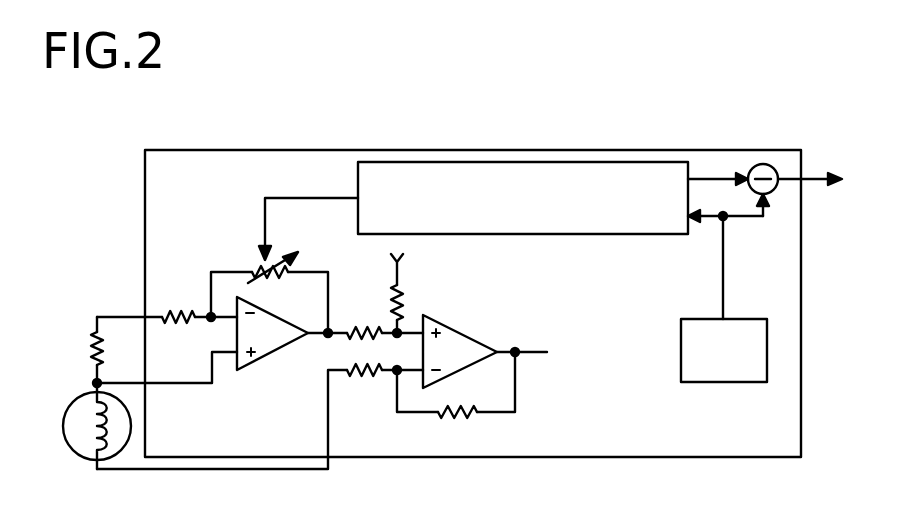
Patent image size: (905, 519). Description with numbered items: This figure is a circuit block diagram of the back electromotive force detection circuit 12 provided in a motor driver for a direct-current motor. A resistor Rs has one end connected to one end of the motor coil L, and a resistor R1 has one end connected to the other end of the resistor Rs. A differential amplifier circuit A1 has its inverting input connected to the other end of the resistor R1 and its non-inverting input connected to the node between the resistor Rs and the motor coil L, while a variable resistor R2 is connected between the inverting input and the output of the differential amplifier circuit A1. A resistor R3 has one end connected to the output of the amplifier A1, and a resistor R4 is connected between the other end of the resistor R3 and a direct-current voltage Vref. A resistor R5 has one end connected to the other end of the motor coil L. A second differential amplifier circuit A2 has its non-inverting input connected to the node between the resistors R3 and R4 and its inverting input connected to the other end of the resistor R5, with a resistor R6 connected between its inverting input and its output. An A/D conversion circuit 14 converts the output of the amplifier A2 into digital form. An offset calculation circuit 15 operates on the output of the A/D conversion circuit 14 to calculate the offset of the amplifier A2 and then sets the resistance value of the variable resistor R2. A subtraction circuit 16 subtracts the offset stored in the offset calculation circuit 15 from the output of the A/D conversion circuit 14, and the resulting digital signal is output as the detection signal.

The back electromotive force detection circuit 12 is at (801, 272).
The A/D conversion circuit 14 is at (728, 382).
The offset calculation circuit 15 is at (455, 162).
The subtraction circuit 16 is at (765, 164).
The resistor R1 is at (199, 303).
The variable resistor R2 is at (269, 292).
The resistor R3 is at (385, 319).
The resistor R4 is at (419, 293).
The resistor R5 is at (385, 388).
The resistor R6 is at (456, 404).
The resistor Rs is at (75, 352).
The differential amplifier circuit A1 is at (277, 350).
The differential amplifier circuit A2 is at (465, 325).
The motor coil L is at (63, 428).
The direct-current voltage Vref is at (438, 260).